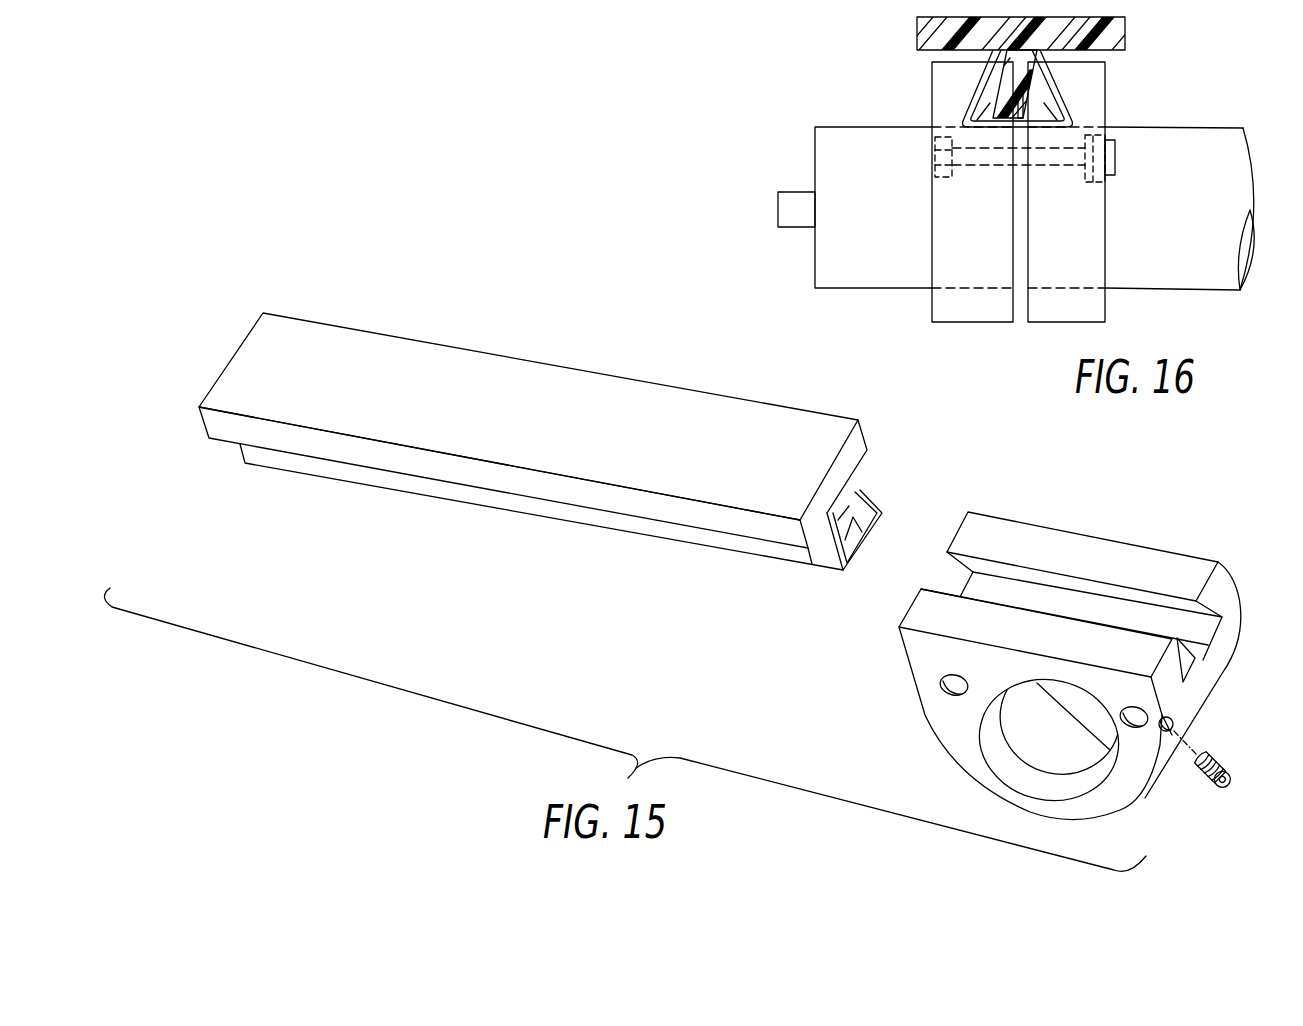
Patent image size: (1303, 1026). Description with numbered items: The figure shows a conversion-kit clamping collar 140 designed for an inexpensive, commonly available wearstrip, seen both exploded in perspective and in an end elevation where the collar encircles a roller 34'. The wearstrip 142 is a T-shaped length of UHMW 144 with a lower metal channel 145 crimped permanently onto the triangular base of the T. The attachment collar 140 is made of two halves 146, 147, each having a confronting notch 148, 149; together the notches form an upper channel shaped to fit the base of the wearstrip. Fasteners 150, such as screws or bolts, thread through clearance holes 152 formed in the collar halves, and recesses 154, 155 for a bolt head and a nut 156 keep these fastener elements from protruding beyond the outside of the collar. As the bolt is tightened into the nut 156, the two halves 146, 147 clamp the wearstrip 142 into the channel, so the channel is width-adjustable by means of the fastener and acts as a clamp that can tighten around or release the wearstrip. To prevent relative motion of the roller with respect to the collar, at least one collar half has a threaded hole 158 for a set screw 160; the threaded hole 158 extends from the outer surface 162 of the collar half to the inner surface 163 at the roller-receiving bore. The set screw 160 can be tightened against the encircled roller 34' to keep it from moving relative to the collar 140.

In FIG. 15, the clamping collar 140 is at (1131, 519).
In FIG. 16, the wearstrip 142 is at (1115, 13).
In FIG. 15, the wearstrip 142 is at (564, 473).
In FIG. 15, the UHMW 144 is at (843, 468).
In FIG. 15, the lower metal channel 145 is at (843, 570).
In FIG. 16, the collar half 146 is at (1103, 92).
In FIG. 15, the collar half 146 is at (1213, 578).
In FIG. 16, the collar half 147 is at (937, 87).
In FIG. 15, the collar half 147 is at (920, 653).
In FIG. 15, the notch 148 is at (1202, 625).
In FIG. 15, the notch 149 is at (1180, 668).
In FIG. 16, the fastener 150 is at (927, 160).
In FIG. 15, the clearance hole 152 is at (1135, 727).
In FIG. 16, the recess 154 is at (926, 186).
In FIG. 16, the recess 155 is at (1095, 183).
In FIG. 16, the nut 156 is at (1117, 158).
In FIG. 15, the threaded hole 158 is at (1178, 727).
In FIG. 15, the set screw 160 is at (1237, 775).
In FIG. 15, the outer surface 162 is at (1187, 708).
In FIG. 15, the inner surface 163 is at (1090, 788).
In FIG. 16, the shaft 34' is at (1009, 208).